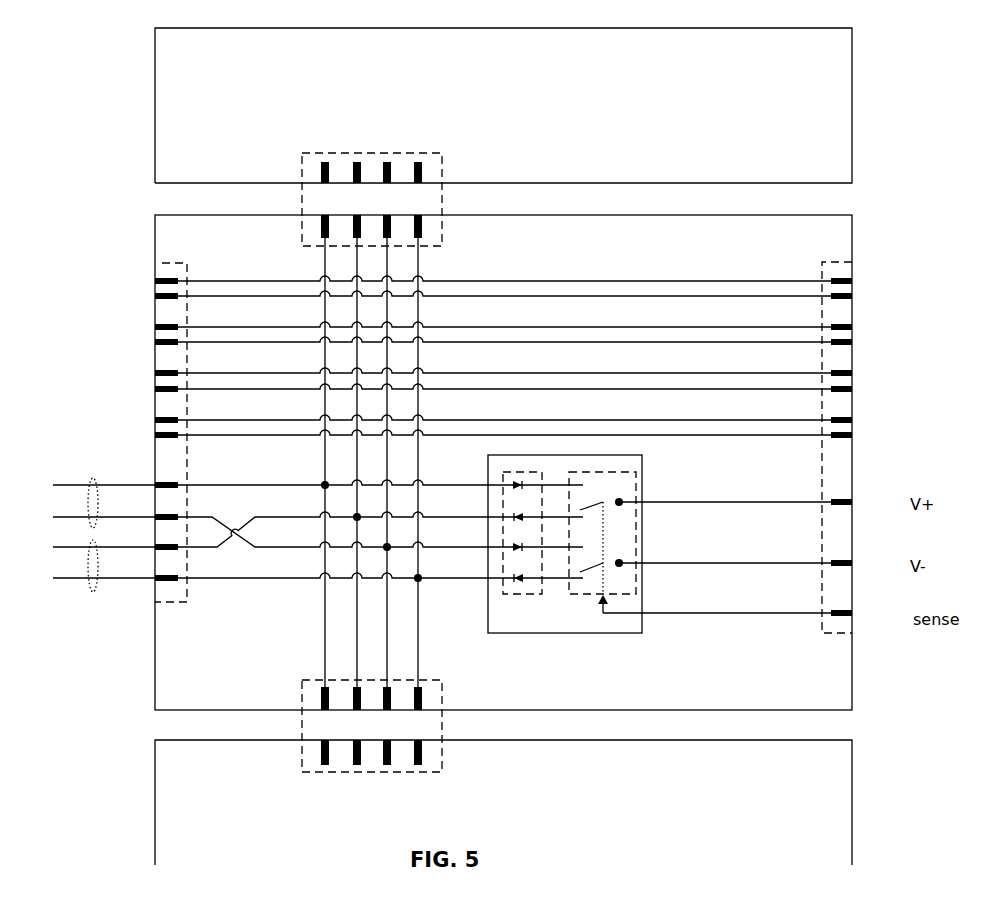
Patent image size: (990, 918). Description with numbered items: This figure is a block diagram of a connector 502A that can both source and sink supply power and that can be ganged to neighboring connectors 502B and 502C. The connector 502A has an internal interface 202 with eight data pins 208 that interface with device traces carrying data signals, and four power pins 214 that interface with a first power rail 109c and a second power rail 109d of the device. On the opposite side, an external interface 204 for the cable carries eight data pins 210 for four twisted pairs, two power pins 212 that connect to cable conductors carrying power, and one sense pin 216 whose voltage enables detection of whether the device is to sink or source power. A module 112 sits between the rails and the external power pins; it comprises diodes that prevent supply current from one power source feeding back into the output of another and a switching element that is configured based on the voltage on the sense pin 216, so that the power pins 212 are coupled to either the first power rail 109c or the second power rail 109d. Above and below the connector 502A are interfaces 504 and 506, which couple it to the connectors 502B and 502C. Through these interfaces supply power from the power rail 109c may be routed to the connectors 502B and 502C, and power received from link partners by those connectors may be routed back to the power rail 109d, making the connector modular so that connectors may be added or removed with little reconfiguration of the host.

The connector 502A is at (155, 231).
The connector 502B is at (155, 137).
The connector 502C is at (155, 787).
The interface 504 is at (442, 231).
The interface 506 is at (443, 683).
The interface 202 is at (178, 262).
The diodes 204 is at (822, 262).
The data pins 208 is at (155, 281).
The data pins 210 is at (852, 281).
The power pins 214 is at (155, 485).
The power pins 212 is at (852, 502).
The sense pin 216 is at (852, 613).
The power rail 109c is at (93, 478).
The power rail 109d is at (93, 592).
The module 112 is at (572, 633).